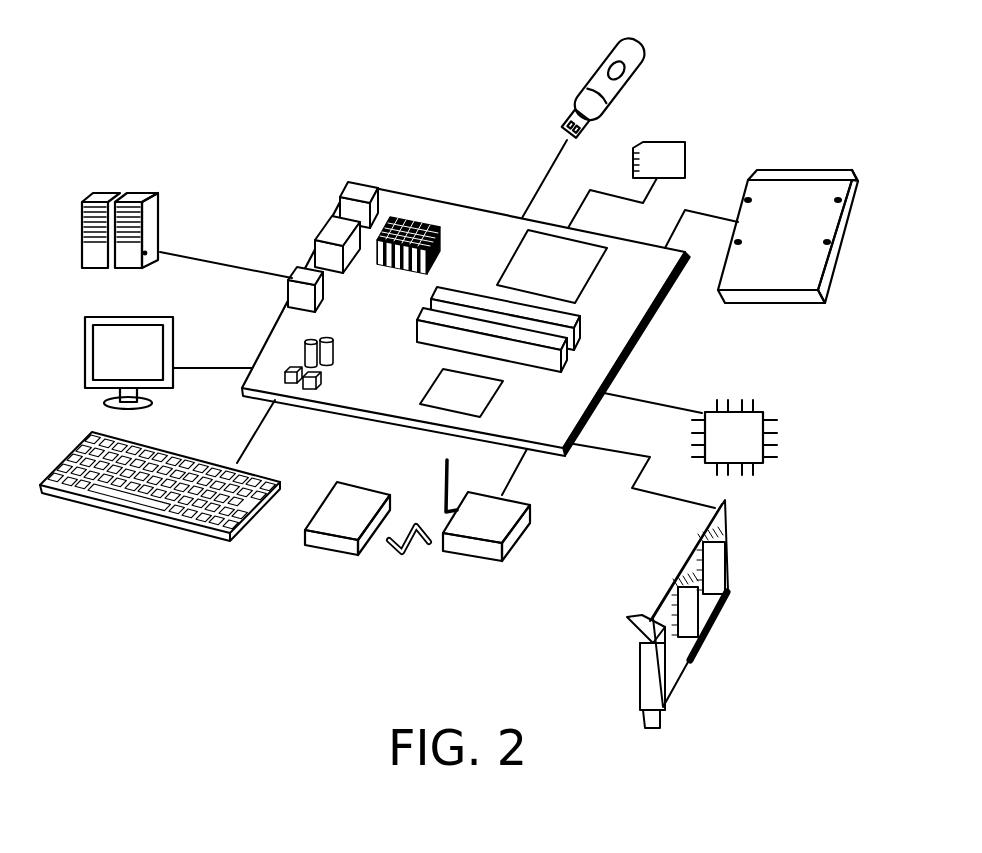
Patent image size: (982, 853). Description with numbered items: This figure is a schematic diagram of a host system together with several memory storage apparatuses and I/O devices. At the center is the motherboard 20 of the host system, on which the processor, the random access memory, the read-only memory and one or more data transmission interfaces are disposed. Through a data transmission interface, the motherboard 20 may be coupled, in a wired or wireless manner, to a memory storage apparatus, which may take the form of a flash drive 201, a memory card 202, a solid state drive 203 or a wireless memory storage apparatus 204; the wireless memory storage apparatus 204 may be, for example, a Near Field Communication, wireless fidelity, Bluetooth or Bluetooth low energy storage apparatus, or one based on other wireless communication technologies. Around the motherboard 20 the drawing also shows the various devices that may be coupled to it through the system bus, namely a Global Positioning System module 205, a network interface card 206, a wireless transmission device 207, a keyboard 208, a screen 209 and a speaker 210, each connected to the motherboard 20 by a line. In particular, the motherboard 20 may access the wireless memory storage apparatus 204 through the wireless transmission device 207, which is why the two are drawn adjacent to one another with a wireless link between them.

The motherboard 20 is at (463, 225).
The flash drive 201 is at (588, 78).
The memory card 202 is at (686, 147).
The solid state drive 203 is at (808, 164).
The wireless memory storage apparatus 204 is at (325, 498).
The Global Positioning System module 205 is at (777, 434).
The network interface card 206 is at (732, 557).
The wireless transmission device 207 is at (523, 542).
The keyboard 208 is at (163, 520).
The screen 209 is at (85, 372).
The speaker 210 is at (80, 253).